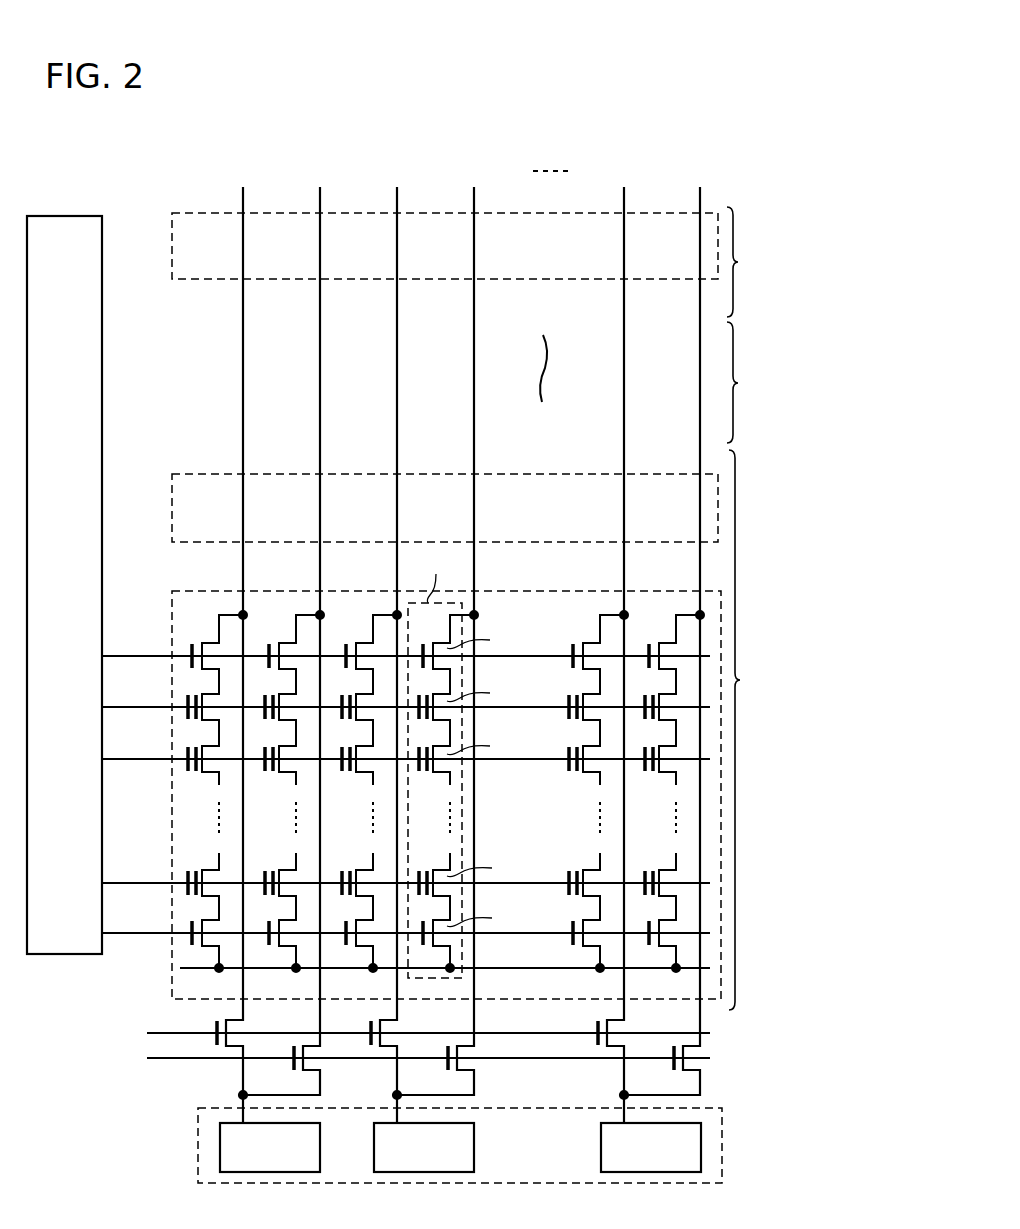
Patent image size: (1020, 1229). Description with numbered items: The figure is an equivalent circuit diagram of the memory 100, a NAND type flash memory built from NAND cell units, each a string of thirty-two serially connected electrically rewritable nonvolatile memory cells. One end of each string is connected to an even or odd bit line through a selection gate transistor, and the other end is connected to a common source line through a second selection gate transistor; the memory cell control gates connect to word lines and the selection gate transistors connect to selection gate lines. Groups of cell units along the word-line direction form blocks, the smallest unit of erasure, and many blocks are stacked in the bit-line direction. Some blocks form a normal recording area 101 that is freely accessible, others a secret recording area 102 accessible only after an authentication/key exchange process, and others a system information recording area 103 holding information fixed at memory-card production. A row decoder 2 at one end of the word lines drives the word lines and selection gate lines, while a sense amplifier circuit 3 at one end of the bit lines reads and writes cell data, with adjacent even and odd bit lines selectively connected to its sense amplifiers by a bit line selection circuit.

The memory 100 is at (517, 141).
The row decoder 2 is at (62, 216).
The sense amplifier circuit 3 is at (198, 1139).
The normal recording area 101 is at (514, 730).
The secret recording area 102 is at (699, 382).
The system information recording area 103 is at (519, 262).